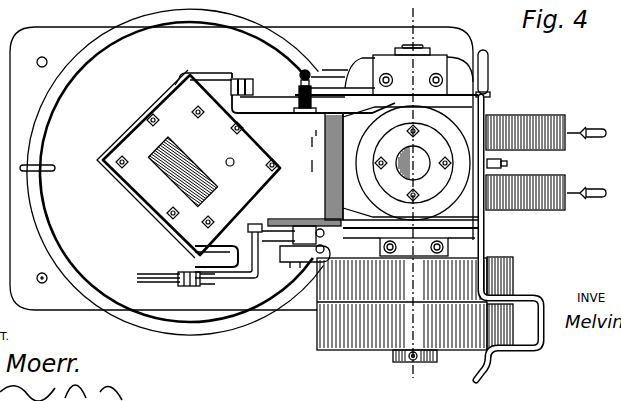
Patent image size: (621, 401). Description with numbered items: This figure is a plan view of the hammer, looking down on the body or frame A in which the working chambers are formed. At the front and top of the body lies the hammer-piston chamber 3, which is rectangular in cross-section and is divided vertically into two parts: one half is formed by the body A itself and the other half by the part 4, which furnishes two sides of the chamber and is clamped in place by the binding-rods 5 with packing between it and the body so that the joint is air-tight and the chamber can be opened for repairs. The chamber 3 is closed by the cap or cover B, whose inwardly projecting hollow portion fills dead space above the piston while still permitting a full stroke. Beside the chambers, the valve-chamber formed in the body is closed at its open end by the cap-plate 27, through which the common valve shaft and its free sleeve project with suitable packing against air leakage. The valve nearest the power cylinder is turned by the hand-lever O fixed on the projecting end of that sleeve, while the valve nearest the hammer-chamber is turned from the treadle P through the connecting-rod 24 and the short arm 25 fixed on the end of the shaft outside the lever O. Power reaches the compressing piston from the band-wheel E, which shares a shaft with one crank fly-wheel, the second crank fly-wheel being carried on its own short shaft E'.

The part 4 is at (130, 128).
The binding-rods 5 is at (252, 78).
The connecting-rod 24 is at (303, 264).
The short arm 25 is at (283, 268).
The cap-plate 27 is at (283, 219).
The body or frame A is at (275, 97).
The cap or cover B is at (191, 165).
The band-wheel E is at (508, 238).
The short shaft E' is at (404, 62).
The treadle P is at (177, 333).
The hammer-piston chamber 3 is at (412, 198).
The hand-lever O is at (136, 276).